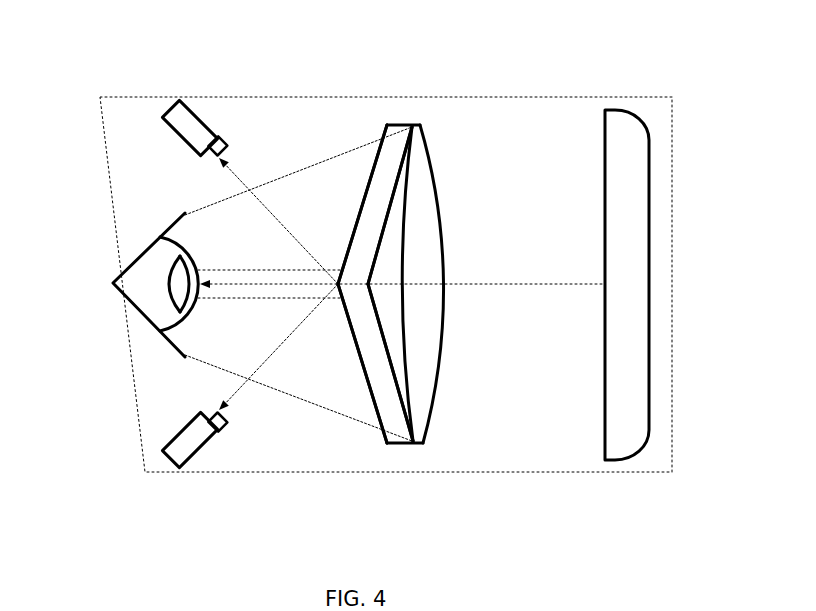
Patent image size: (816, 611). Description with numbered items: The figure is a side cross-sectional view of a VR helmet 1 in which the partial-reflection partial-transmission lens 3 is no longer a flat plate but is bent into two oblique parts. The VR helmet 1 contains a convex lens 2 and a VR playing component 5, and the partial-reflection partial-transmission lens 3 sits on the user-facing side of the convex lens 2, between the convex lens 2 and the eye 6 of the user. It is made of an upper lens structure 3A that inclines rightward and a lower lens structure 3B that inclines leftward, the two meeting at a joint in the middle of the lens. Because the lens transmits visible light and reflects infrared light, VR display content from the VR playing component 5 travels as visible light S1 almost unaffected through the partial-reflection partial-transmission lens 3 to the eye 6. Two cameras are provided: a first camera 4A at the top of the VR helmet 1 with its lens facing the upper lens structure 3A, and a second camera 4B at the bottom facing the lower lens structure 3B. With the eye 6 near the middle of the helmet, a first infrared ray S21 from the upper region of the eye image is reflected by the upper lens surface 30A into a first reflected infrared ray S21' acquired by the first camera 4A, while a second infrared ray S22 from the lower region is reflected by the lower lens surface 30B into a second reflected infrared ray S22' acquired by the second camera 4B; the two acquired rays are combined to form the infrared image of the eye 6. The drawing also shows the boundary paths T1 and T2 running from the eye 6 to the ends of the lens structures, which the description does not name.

The VR helmet 1 is at (508, 97).
The convex lens 2 is at (430, 448).
The partial-reflection partial-transmission lens 3 is at (397, 448).
The upper lens structure 3A is at (387, 125).
The lower lens structure 3B is at (405, 420).
The upper lens surface 30A is at (358, 217).
The lower lens surface 30B is at (367, 378).
The first camera 4A is at (182, 122).
The second camera 4B is at (180, 452).
The VR playing component 5 is at (620, 445).
The eye 6 is at (148, 249).
The visible light S1 is at (513, 285).
The first infrared ray S21 is at (270, 249).
The second infrared ray S22 is at (270, 321).
The first reflected infrared ray S21' is at (278, 210).
The second reflected infrared ray S22' is at (278, 368).
The first boundary light path T1 is at (320, 168).
The second boundary light path T2 is at (198, 352).